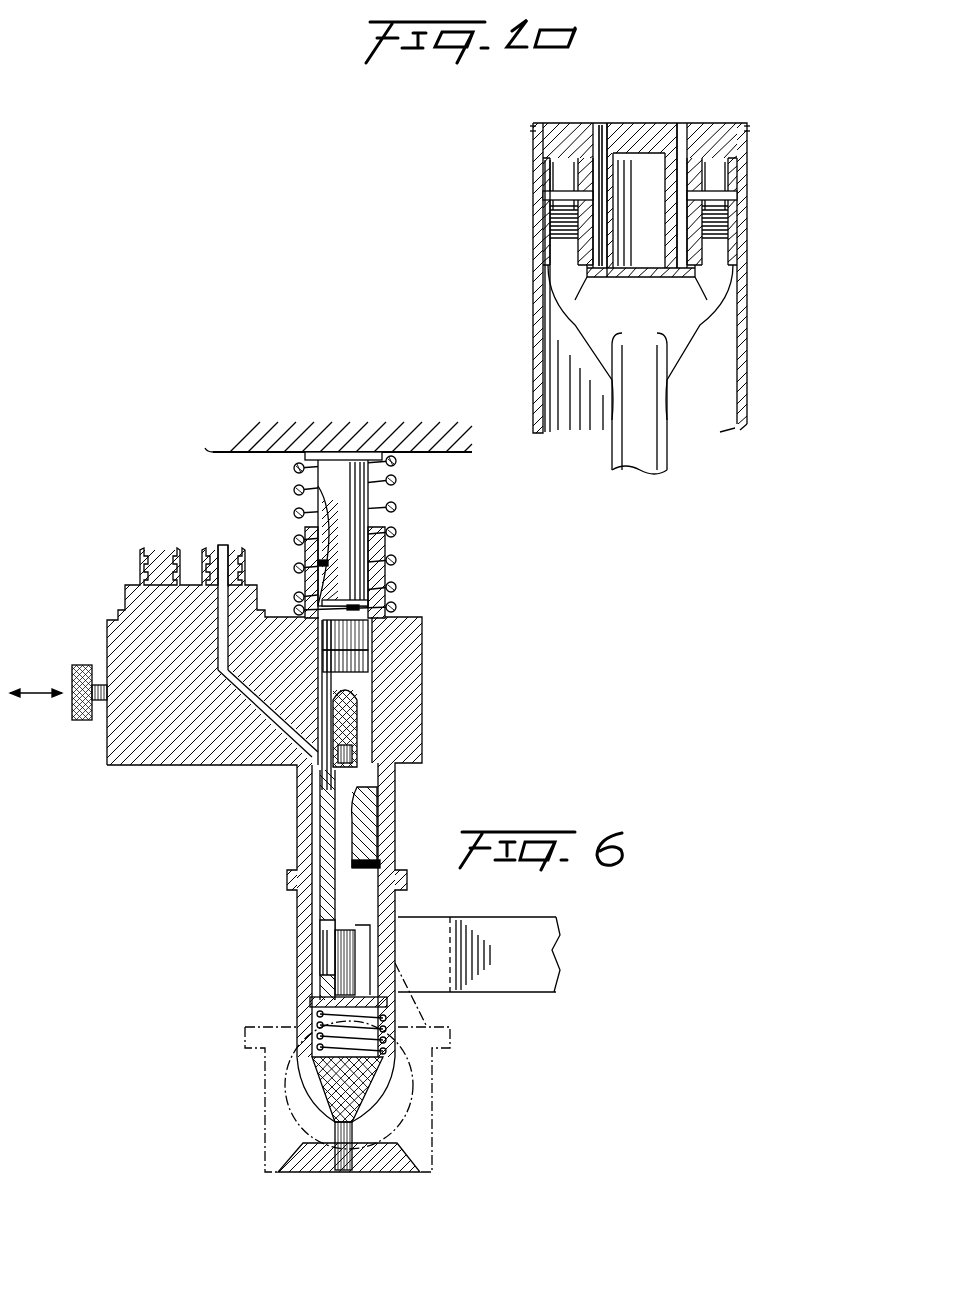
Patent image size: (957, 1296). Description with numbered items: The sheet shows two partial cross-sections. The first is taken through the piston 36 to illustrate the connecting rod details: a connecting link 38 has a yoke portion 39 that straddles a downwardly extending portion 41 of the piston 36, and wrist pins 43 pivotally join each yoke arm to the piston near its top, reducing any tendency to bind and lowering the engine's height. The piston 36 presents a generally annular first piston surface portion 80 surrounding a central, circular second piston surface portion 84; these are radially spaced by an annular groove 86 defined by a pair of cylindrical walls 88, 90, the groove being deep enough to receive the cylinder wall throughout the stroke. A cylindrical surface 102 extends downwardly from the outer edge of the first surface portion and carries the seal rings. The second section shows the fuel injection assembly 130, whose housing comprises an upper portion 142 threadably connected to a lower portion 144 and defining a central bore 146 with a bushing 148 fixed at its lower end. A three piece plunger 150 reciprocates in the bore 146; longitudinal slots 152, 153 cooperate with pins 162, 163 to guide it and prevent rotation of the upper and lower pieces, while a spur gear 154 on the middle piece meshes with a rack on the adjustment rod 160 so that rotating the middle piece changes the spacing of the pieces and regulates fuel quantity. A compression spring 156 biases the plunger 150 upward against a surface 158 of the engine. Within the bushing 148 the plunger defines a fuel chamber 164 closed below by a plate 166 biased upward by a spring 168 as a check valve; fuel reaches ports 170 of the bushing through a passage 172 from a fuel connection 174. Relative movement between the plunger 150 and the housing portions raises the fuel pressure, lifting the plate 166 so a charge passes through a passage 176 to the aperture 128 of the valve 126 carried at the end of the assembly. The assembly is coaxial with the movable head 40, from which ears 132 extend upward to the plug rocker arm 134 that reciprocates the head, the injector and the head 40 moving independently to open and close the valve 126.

In FIG. 2A, the piston 36 is at (522, 345).
In FIG. 2A, the connecting link 38 is at (662, 452).
In FIG. 2A, the yoke portion 39 is at (570, 283).
In FIG. 2A, the downwardly extending portion 41 is at (680, 290).
In FIG. 2A, the wrist pins 43 is at (542, 196).
In FIG. 2A, the first piston surface portion 80 is at (740, 122).
In FIG. 2A, the second piston surface portion 84 is at (650, 125).
In FIG. 2A, the annular groove 86 is at (602, 208).
In FIG. 2A, the cylindrical wall 88 is at (603, 158).
In FIG. 2A, the cylindrical wall 90 is at (683, 145).
In FIG. 2A, the cylindrical surface 102 is at (748, 272).
In FIG. 6, the valve 126 is at (312, 1165).
In FIG. 6, the aperture 128 is at (355, 1170).
In FIG. 6, the fuel injection assembly 130 is at (430, 636).
In FIG. 6, the ears 132 is at (413, 1017).
In FIG. 6, the plug rocker arm 134 is at (545, 962).
In FIG. 6, the upper housing portion 142 is at (150, 773).
In FIG. 6, the lower housing portion 144 is at (303, 920).
In FIG. 6, the bore 146 is at (368, 735).
In FIG. 6, the bushing 148 is at (367, 832).
In FIG. 6, the plunger 150 is at (335, 468).
In FIG. 6, the longitudinal slot 152 is at (322, 525).
In FIG. 6, the longitudinal slot 153 is at (357, 805).
In FIG. 6, the spur gear 154 is at (357, 673).
In FIG. 6, the compression spring 156 is at (396, 506).
In FIG. 6, the surface 158 is at (213, 452).
In FIG. 6, the adjustment rod 160 is at (82, 668).
In FIG. 6, the pin 162 is at (310, 562).
In FIG. 6, the pin 163 is at (375, 864).
In FIG. 6, the fuel chamber 164 is at (347, 968).
In FIG. 6, the plate 166 is at (312, 1002).
In FIG. 6, the spring 168 is at (332, 1047).
In FIG. 6, the ports 170 is at (325, 945).
In FIG. 6, the passage 172 is at (268, 745).
In FIG. 6, the fuel connection 174 is at (212, 553).
In FIG. 6, the passage 176 is at (330, 1092).
In FIG. 6, the movable head 40 is at (432, 1066).